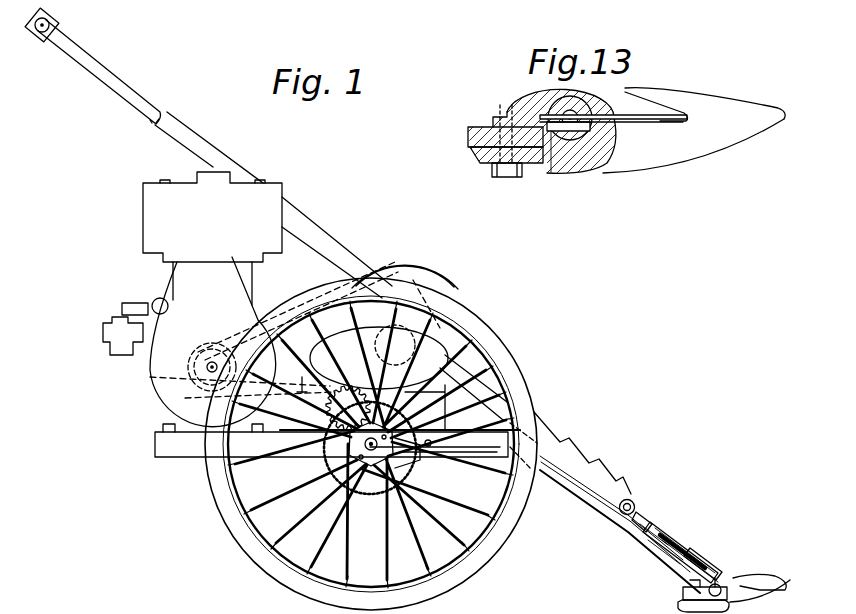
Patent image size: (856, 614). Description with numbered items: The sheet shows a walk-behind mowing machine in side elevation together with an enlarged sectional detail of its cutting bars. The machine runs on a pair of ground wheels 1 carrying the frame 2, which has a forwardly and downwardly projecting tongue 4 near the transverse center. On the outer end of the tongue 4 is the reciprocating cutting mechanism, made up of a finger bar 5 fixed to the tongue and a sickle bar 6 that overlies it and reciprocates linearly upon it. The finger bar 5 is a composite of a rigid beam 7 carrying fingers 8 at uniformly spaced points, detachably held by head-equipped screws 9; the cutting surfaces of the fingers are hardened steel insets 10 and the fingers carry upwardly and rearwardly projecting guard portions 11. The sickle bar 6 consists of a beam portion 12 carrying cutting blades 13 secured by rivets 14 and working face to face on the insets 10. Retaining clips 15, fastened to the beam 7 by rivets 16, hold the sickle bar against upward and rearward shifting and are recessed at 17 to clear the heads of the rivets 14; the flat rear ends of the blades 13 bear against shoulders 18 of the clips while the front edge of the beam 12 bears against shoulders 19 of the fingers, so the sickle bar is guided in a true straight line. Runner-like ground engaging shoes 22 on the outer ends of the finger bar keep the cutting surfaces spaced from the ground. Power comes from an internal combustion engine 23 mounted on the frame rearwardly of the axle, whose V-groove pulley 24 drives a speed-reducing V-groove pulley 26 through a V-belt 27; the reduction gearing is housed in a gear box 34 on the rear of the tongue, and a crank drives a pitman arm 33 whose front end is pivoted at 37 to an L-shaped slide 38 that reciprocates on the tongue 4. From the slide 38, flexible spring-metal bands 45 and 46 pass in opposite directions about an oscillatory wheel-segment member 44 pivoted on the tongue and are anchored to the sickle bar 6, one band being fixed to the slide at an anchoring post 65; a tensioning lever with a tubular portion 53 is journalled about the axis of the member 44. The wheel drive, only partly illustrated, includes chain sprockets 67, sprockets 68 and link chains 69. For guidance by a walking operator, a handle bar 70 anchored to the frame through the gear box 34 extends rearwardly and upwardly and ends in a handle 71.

In FIG. 1, the ground wheels 1 is at (496, 552).
In FIG. 1, the frame 2 is at (190, 446).
In FIG. 1, the frame tongue 4 is at (610, 517).
In FIG. 1, the finger bar 5 is at (680, 590).
In FIG. 13, the finger bar 5 is at (466, 134).
In FIG. 13, the sickle bar 6 is at (587, 106).
In FIG. 13, the beam 7 is at (470, 143).
In FIG. 1, the fingers 8 is at (762, 592).
In FIG. 13, the fingers 8 is at (678, 152).
In FIG. 13, the head-equipped screws 9 is at (506, 168).
In FIG. 13, the hardened steel insets 10 is at (674, 123).
In FIG. 1, the guard portions 11 is at (735, 578).
In FIG. 13, the guard portions 11 is at (661, 95).
In FIG. 13, the beam portion 12 is at (552, 132).
In FIG. 13, the cutting blades 13 is at (634, 114).
In FIG. 13, the rivets 14 is at (569, 108).
In FIG. 13, the retaining clips 15 is at (538, 102).
In FIG. 13, the rivets 16 is at (505, 104).
In FIG. 13, the recess 17 is at (553, 96).
In FIG. 13, the shoulders 18 is at (490, 115).
In FIG. 13, the shoulders 19 is at (592, 128).
In FIG. 1, the ground engaging shoes 22 is at (684, 604).
In FIG. 1, the internal combustion engine 23 is at (192, 300).
In FIG. 1, the V-groove pulley 24 is at (196, 368).
In FIG. 1, the speed-reducing V-groove pulley 26 is at (436, 274).
In FIG. 1, the V-belt 27 is at (236, 334).
In FIG. 1, the pitman arm 33 is at (548, 438).
In FIG. 1, the gear box 34 is at (440, 348).
In FIG. 1, the pivot 37 is at (634, 502).
In FIG. 1, the slide 38 is at (650, 514).
In FIG. 1, the oscillatory member 44 is at (702, 544).
In FIG. 1, the flexible band 45 is at (660, 548).
In FIG. 1, the flexible band 46 is at (664, 530).
In FIG. 1, the tubular portion 53 is at (692, 541).
In FIG. 1, the anchoring post 65 is at (655, 524).
In FIG. 1, the chain sprockets 67 is at (372, 480).
In FIG. 1, the sprockets 68 is at (345, 447).
In FIG. 1, the link chains 69 is at (422, 463).
In FIG. 1, the handle bar 70 is at (218, 159).
In FIG. 1, the handle 71 is at (56, 27).